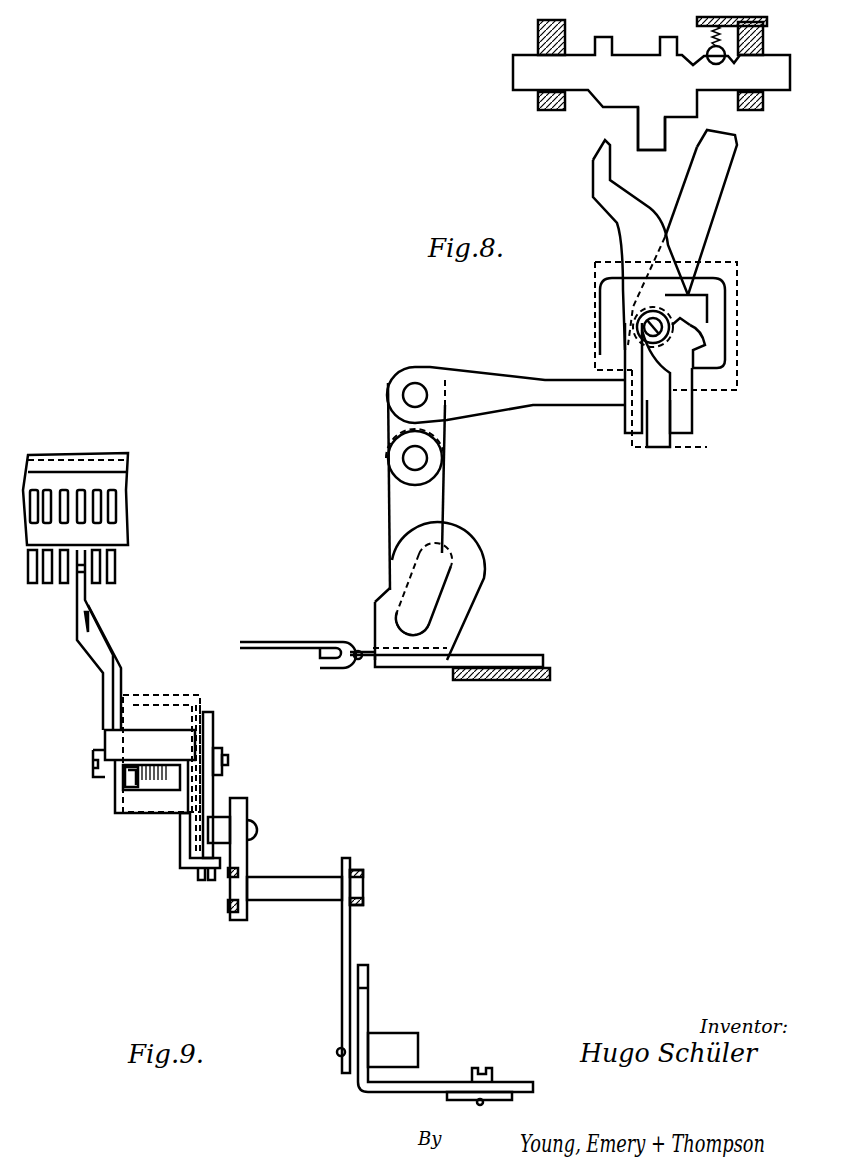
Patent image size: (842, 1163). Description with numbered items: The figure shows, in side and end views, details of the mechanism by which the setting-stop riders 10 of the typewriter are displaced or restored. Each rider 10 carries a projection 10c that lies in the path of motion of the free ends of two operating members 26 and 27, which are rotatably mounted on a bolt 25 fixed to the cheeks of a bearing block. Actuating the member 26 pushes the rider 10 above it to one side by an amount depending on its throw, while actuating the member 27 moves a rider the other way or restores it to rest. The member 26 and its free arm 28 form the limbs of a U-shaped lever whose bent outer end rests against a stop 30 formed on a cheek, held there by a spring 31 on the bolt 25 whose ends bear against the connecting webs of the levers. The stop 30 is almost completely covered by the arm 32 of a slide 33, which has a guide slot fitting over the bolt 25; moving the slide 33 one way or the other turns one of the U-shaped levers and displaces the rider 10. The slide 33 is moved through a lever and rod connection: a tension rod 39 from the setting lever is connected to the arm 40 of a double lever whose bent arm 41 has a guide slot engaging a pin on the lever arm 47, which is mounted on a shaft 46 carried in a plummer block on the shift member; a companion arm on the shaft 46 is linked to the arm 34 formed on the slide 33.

In FIG. 8, the rider 10 is at (520, 70).
In FIG. 9, the rider 10 is at (117, 507).
In FIG. 8, the projection of rider 10c is at (648, 144).
In FIG. 9, the projection of rider 10c is at (112, 577).
In FIG. 8, the bolt 25 is at (637, 325).
In FIG. 9, the bolt 25 is at (228, 760).
In FIG. 8, the operating member 26 is at (720, 169).
In FIG. 9, the operating member 26 is at (95, 630).
In FIG. 8, the operating member 27 is at (595, 172).
In FIG. 9, the operating member 27 is at (77, 628).
In FIG. 8, the free arm 28 is at (676, 406).
In FIG. 9, the free arm 28 is at (180, 850).
In FIG. 8, the stop 30 is at (687, 416).
In FIG. 9, the stop 30 is at (200, 882).
In FIG. 8, the spring 31 is at (692, 325).
In FIG. 9, the spring 31 is at (138, 780).
In FIG. 8, the arm of slide 32 is at (657, 448).
In FIG. 9, the arm of slide 32 is at (212, 880).
In FIG. 8, the slide 33 is at (717, 300).
In FIG. 9, the slide 33 is at (213, 730).
In FIG. 8, the arm of slide 34 is at (510, 402).
In FIG. 9, the arm of slide 34 is at (240, 822).
In FIG. 8, the tension rod 39 is at (280, 650).
In FIG. 8, the arm of lever 40 is at (365, 660).
In FIG. 9, the arm of lever 40 is at (428, 1085).
In FIG. 8, the bent arm of lever 41 is at (457, 602).
In FIG. 9, the bent arm of lever 41 is at (363, 1010).
In FIG. 8, the shaft 46 is at (415, 458).
In FIG. 9, the shaft 46 is at (312, 853).
In FIG. 9, the lever arm 47 is at (345, 955).